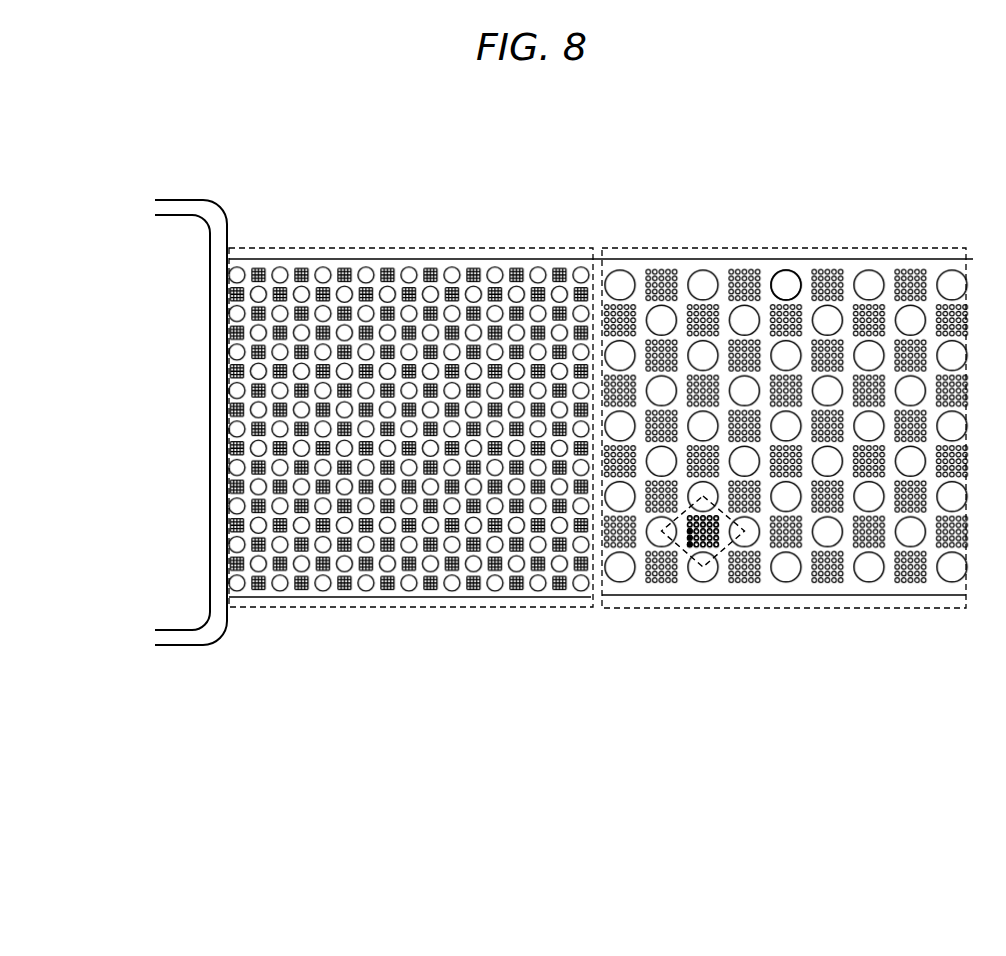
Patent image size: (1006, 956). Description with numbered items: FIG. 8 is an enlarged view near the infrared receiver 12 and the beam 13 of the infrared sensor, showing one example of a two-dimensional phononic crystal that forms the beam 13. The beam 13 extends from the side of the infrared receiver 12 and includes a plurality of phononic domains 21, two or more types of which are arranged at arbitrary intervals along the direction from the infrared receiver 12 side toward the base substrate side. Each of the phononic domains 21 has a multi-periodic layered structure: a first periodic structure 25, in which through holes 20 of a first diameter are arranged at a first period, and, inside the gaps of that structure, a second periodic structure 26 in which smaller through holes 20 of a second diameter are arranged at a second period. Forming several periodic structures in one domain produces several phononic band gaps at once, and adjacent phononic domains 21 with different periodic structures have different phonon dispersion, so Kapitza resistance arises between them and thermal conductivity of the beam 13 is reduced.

The infrared receiver 12 is at (187, 210).
The beam 13 is at (270, 259).
The through holes 20 is at (778, 268).
The phononic domains 21 is at (828, 259).
The first periodic structure 25 is at (727, 552).
The second periodic structure 26 is at (689, 542).